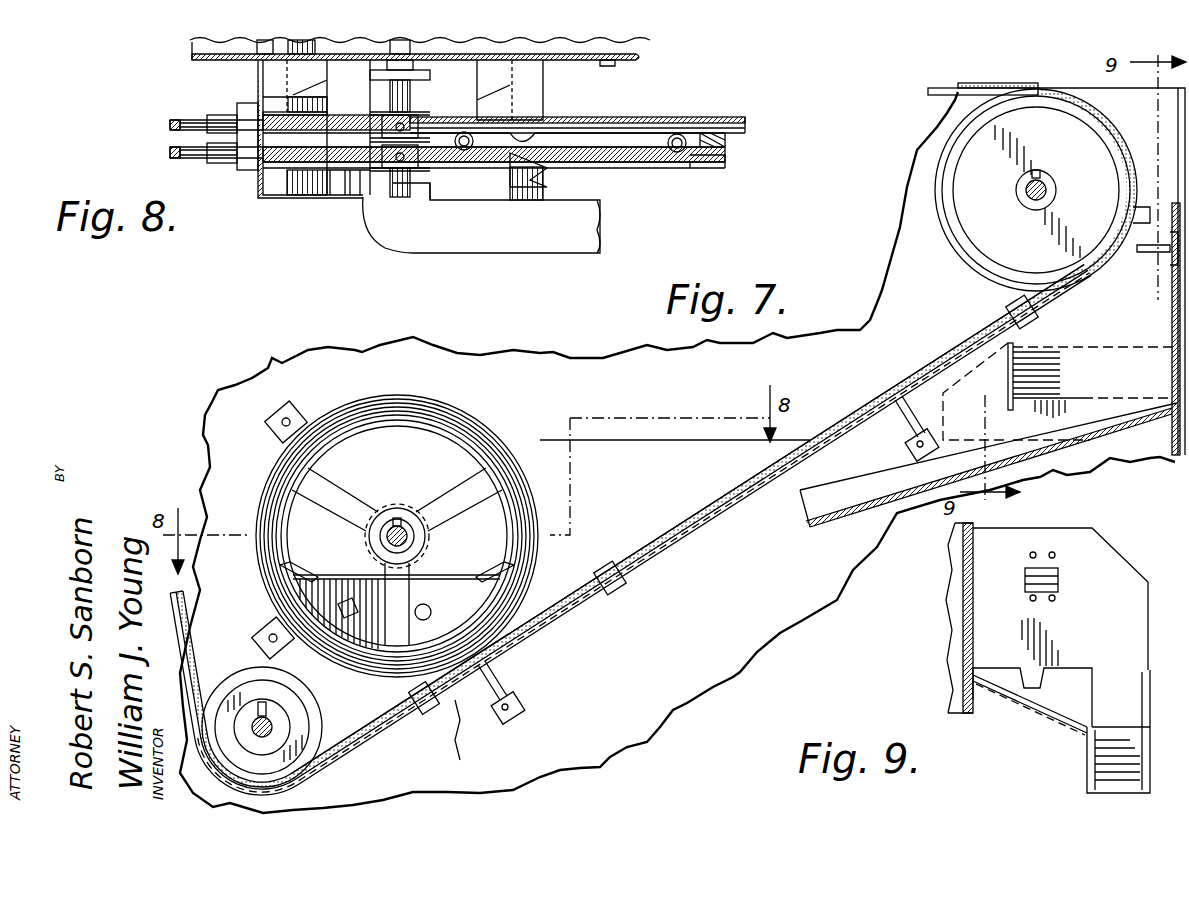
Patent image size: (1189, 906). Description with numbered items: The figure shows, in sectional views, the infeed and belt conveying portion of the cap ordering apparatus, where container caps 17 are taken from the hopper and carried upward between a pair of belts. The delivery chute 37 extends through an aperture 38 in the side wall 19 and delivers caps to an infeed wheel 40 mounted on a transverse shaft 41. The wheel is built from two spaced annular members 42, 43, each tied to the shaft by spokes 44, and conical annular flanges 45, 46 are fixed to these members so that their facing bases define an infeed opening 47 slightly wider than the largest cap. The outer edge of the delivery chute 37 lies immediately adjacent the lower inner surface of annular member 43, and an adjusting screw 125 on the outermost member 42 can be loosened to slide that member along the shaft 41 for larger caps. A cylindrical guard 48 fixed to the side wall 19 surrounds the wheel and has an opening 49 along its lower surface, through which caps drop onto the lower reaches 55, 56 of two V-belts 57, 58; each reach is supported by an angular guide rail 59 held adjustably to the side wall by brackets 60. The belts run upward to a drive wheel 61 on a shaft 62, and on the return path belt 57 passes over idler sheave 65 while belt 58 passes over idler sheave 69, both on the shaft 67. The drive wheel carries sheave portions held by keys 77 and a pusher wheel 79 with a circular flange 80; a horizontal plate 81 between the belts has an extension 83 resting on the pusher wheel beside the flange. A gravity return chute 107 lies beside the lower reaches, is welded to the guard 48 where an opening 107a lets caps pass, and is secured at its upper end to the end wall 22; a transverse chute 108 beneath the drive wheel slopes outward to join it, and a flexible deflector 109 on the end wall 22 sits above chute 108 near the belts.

In FIG. 8, the container caps 17 is at (464, 132).
In FIG. 7, the container caps 17 is at (431, 612).
In FIG. 8, the side wall 19 is at (605, 62).
In FIG. 7, the side wall 19 is at (227, 400).
In FIG. 9, the side wall 19 is at (965, 635).
In FIG. 7, the end wall 22 is at (1172, 460).
In FIG. 9, the end wall 22 is at (985, 598).
In FIG. 8, the delivery chute 37 is at (612, 44).
In FIG. 7, the delivery chute 37 is at (320, 595).
In FIG. 7, the aperture 38 is at (445, 585).
In FIG. 8, the infeed wheel 40 is at (555, 178).
In FIG. 7, the infeed wheel 40 is at (430, 400).
In FIG. 8, the transverse shaft 41 is at (395, 200).
In FIG. 7, the transverse shaft 41 is at (415, 512).
In FIG. 8, the annular member 42 is at (258, 200).
In FIG. 8, the annular member 43 is at (262, 92).
In FIG. 7, the spokes 44 is at (375, 497).
In FIG. 8, the annular flange 45 is at (295, 197).
In FIG. 8, the annular flange 46 is at (340, 197).
In FIG. 7, the annular flange 46 is at (468, 412).
In FIG. 8, the infeed opening 47 is at (245, 112).
In FIG. 7, the cylindrical guard 48 is at (350, 405).
In FIG. 8, the opening 49 is at (585, 118).
In FIG. 7, the opening 49 is at (460, 737).
In FIG. 8, the lower reach 55 is at (692, 160).
In FIG. 8, the lower reach 56 is at (695, 117).
In FIG. 7, the lower reach 56 is at (355, 740).
In FIG. 8, the V-belt 57 is at (170, 125).
In FIG. 8, the V-belt 58 is at (170, 152).
In FIG. 7, the V-belt 58 is at (722, 512).
In FIG. 8, the guide rail 59 is at (745, 135).
In FIG. 7, the guide rail 59 is at (590, 605).
In FIG. 7, the bracket 60 is at (905, 438).
In FIG. 7, the drive wheel 61 is at (978, 158).
In FIG. 7, the shaft 62 is at (1024, 190).
In FIG. 8, the idler sheave 65 is at (215, 165).
In FIG. 8, the shaft 67 is at (190, 44).
In FIG. 7, the shaft 67 is at (272, 728).
In FIG. 8, the idler sheave 69 is at (215, 120).
In FIG. 7, the idler sheave 69 is at (243, 676).
In FIG. 7, the key 77 is at (1035, 322).
In FIG. 7, the pusher wheel 79 is at (970, 235).
In FIG. 7, the circular flange 80 is at (1060, 107).
In FIG. 7, the horizontal plate 81 is at (938, 88).
In FIG. 7, the extension 83 is at (1030, 85).
In FIG. 8, the gravity return chute 107 is at (520, 253).
In FIG. 7, the gravity return chute 107 is at (812, 528).
In FIG. 9, the gravity return chute 107 is at (1100, 795).
In FIG. 8, the opening 107a is at (418, 200).
In FIG. 7, the transverse chute 108 is at (1122, 360).
In FIG. 9, the transverse chute 108 is at (1030, 705).
In FIG. 7, the deflector 109 is at (1140, 252).
In FIG. 9, the deflector 109 is at (1052, 602).
In FIG. 8, the adjusting screw 125 is at (428, 168).
In FIG. 7, the adjusting screw 125 is at (397, 522).